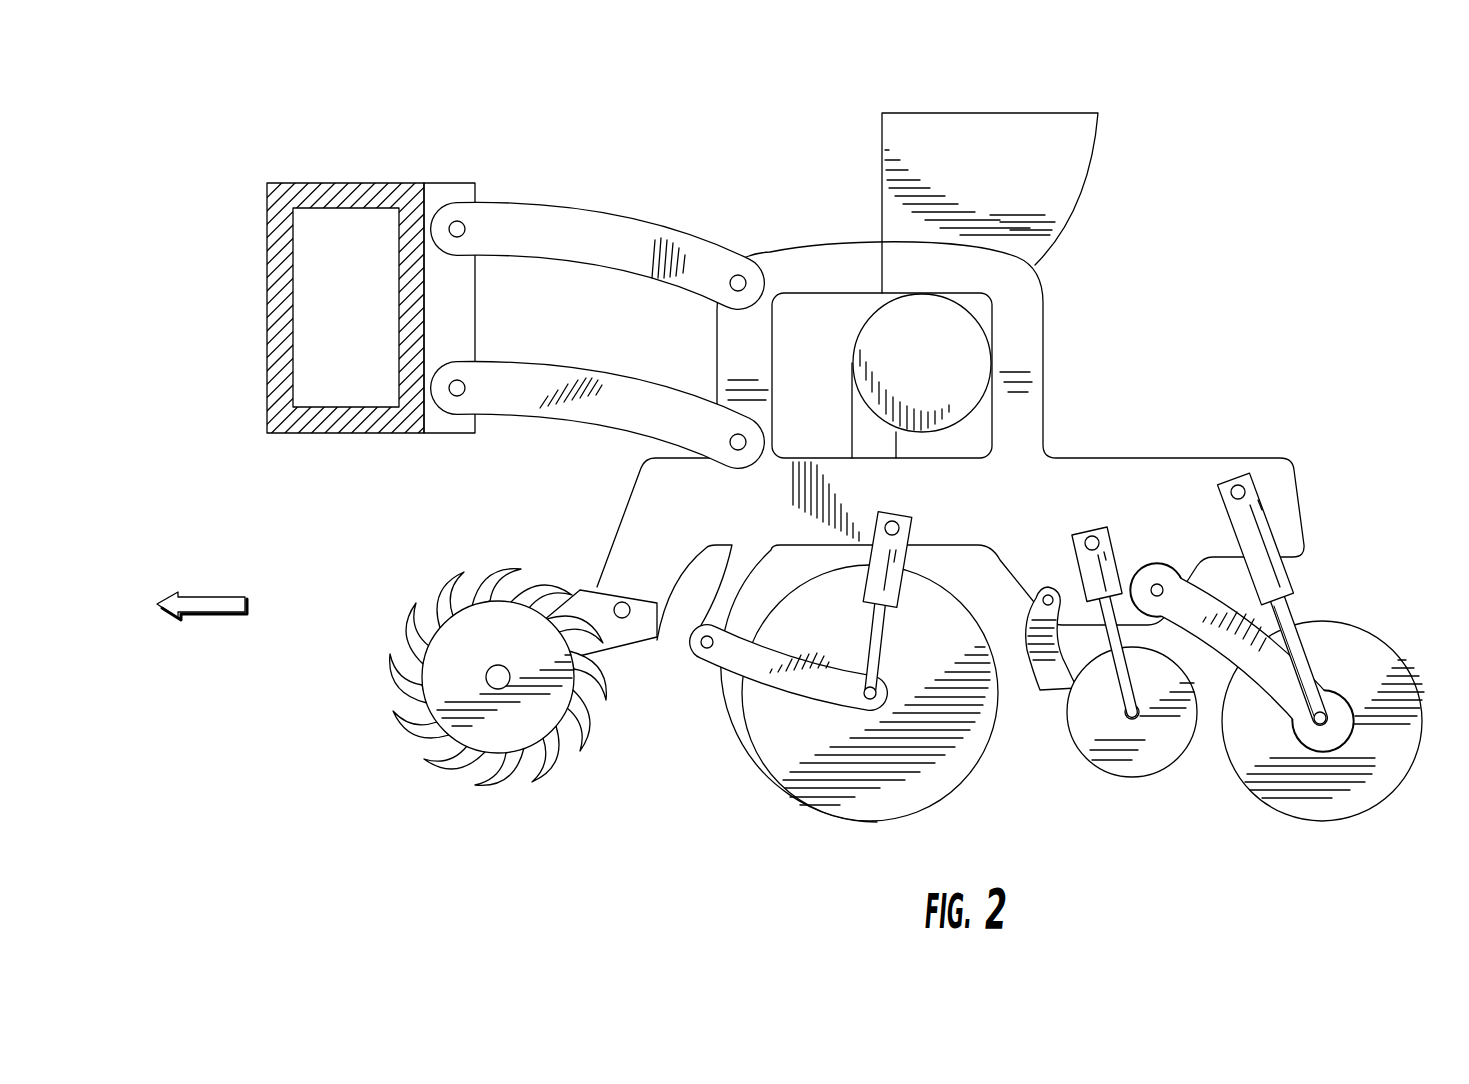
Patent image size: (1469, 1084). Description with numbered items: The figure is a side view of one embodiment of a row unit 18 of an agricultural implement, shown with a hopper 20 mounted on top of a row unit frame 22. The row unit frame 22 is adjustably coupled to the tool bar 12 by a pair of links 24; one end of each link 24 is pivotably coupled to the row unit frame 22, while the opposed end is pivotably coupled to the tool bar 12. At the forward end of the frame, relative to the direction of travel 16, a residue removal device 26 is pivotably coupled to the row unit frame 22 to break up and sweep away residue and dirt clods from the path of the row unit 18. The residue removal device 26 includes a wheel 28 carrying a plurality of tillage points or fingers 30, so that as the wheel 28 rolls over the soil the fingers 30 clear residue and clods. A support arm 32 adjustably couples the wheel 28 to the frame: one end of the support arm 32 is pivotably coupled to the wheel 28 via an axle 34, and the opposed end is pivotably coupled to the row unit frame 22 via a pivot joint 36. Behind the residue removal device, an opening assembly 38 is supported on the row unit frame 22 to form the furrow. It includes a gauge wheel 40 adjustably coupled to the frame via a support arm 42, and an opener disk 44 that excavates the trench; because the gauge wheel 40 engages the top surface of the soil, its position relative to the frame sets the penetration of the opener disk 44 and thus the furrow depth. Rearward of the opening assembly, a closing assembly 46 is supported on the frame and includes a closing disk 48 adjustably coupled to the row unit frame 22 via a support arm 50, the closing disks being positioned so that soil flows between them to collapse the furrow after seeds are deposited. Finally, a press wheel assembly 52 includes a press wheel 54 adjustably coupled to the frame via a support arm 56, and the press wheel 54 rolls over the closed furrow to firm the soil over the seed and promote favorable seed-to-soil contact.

The tool bar 12 is at (267, 337).
The direction of travel 16 is at (208, 597).
The row unit 18 is at (182, 156).
The hopper 20 is at (912, 112).
The row unit frame 22 is at (1088, 482).
The links 24 is at (598, 267).
The residue removal device 26 is at (378, 602).
The wheel 28 is at (463, 737).
The fingers 30 is at (460, 574).
The support arm 32 is at (590, 598).
The axle 34 is at (486, 670).
The pivot joint 36 is at (622, 618).
The opening assembly 38 is at (767, 815).
The gauge wheel 40 is at (905, 788).
The support arm 42 is at (833, 710).
The opener disk 44 is at (728, 737).
The closing assembly 46 is at (1060, 775).
The closing disk 48 is at (1132, 777).
The support arm 50 is at (1033, 687).
The press wheel assembly 52 is at (1387, 607).
The press wheel 54 is at (1412, 680).
The support arm 56 is at (1353, 730).